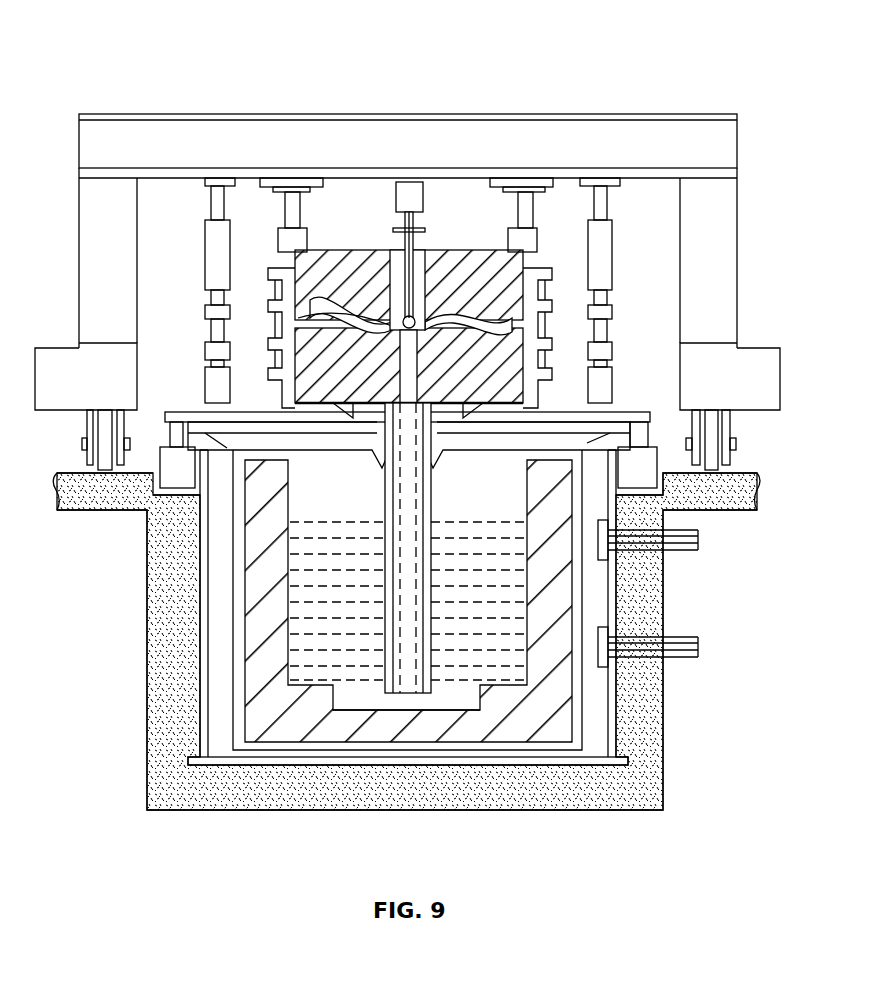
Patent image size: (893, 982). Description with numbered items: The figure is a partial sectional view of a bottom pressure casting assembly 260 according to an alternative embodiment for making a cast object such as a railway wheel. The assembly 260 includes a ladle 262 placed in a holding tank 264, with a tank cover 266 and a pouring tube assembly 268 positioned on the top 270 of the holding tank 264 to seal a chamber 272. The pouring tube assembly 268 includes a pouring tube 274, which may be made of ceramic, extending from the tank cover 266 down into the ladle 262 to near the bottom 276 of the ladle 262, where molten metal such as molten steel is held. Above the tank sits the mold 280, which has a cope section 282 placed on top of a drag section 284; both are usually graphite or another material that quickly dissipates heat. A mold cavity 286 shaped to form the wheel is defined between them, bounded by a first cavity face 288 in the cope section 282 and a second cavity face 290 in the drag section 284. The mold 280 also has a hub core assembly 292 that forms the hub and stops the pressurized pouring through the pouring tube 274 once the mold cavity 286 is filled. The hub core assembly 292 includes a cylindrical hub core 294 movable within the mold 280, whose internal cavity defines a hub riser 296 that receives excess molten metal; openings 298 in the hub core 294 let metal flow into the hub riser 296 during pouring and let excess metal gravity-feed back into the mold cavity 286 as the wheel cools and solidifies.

The bottom pressure casting assembly 260 is at (138, 52).
The ladle 262 is at (622, 405).
The holding tank 264 is at (553, 612).
The tank cover 266 is at (500, 437).
The pouring tube assembly 268 is at (372, 462).
The top 270 is at (553, 457).
The chamber 272 is at (226, 553).
The pouring tube 274 is at (392, 515).
The bottom 276 is at (380, 703).
The mold 280 is at (438, 205).
The cope section 282 is at (457, 272).
The drag section 284 is at (550, 357).
The mold cavity 286 is at (295, 393).
The first cavity face 288 is at (302, 235).
The second cavity face 290 is at (345, 318).
The hub core assembly 292 is at (392, 255).
The hub core 294 is at (510, 252).
The hub riser 296 is at (395, 258).
The openings 298 is at (345, 290).